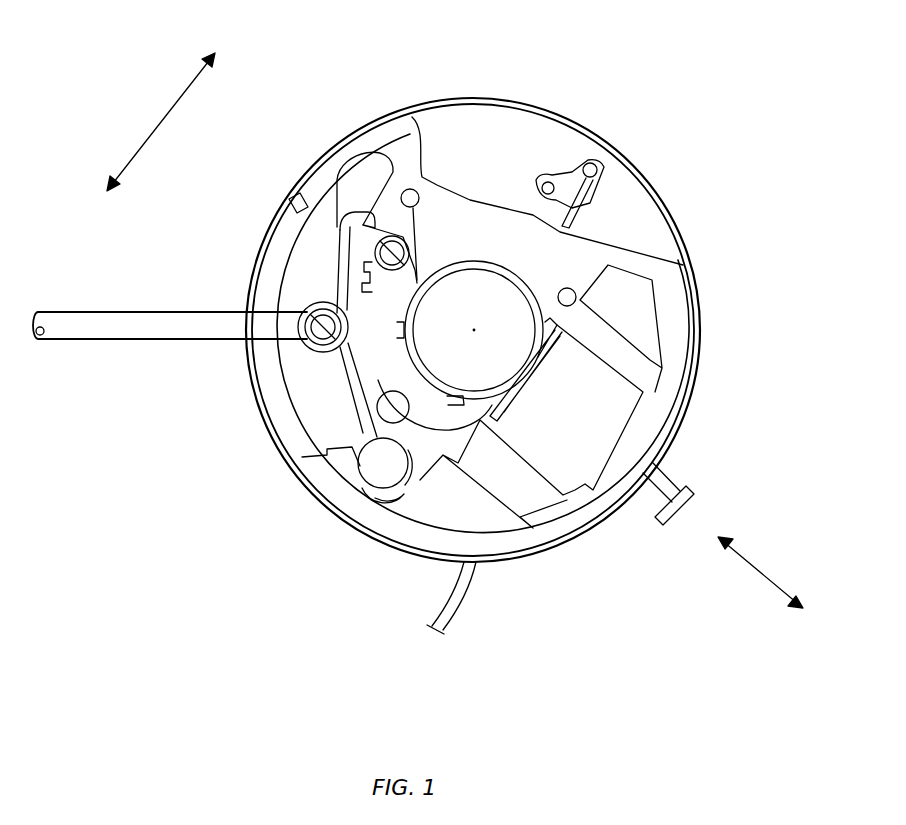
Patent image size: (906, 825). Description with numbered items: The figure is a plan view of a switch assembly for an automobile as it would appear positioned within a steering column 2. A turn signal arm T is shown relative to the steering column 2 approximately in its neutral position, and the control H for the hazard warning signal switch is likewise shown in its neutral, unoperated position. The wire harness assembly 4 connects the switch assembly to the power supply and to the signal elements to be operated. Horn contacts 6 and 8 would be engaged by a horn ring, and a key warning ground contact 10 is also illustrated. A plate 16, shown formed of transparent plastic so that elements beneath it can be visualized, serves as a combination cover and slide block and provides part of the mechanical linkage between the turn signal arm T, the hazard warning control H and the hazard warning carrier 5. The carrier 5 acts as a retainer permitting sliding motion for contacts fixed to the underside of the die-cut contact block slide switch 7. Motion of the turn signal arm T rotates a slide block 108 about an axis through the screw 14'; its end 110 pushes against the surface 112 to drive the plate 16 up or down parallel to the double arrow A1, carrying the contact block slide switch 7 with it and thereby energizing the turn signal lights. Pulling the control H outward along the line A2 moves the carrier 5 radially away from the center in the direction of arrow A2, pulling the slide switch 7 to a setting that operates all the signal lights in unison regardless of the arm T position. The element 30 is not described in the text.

The steering column 2 is at (465, 97).
The wire harness assembly 4 is at (455, 613).
The hazard warning carrier 5 is at (620, 402).
The horn contact 6 is at (418, 190).
The contact block slide switch 7 is at (614, 346).
The horn contact 8 is at (582, 296).
The key warning ground contact 10 is at (592, 165).
The screw 14' is at (263, 297).
The plate 16 is at (352, 175).
The lens mount 30 is at (680, 290).
The slide block 108 is at (340, 377).
The end of slide block 110 is at (380, 470).
The surface 112 is at (380, 504).
The hazard warning signal switch control H is at (670, 478).
The turn signal arm T is at (68, 312).
The double arrow A1 is at (160, 122).
The arrow A2 is at (760, 572).